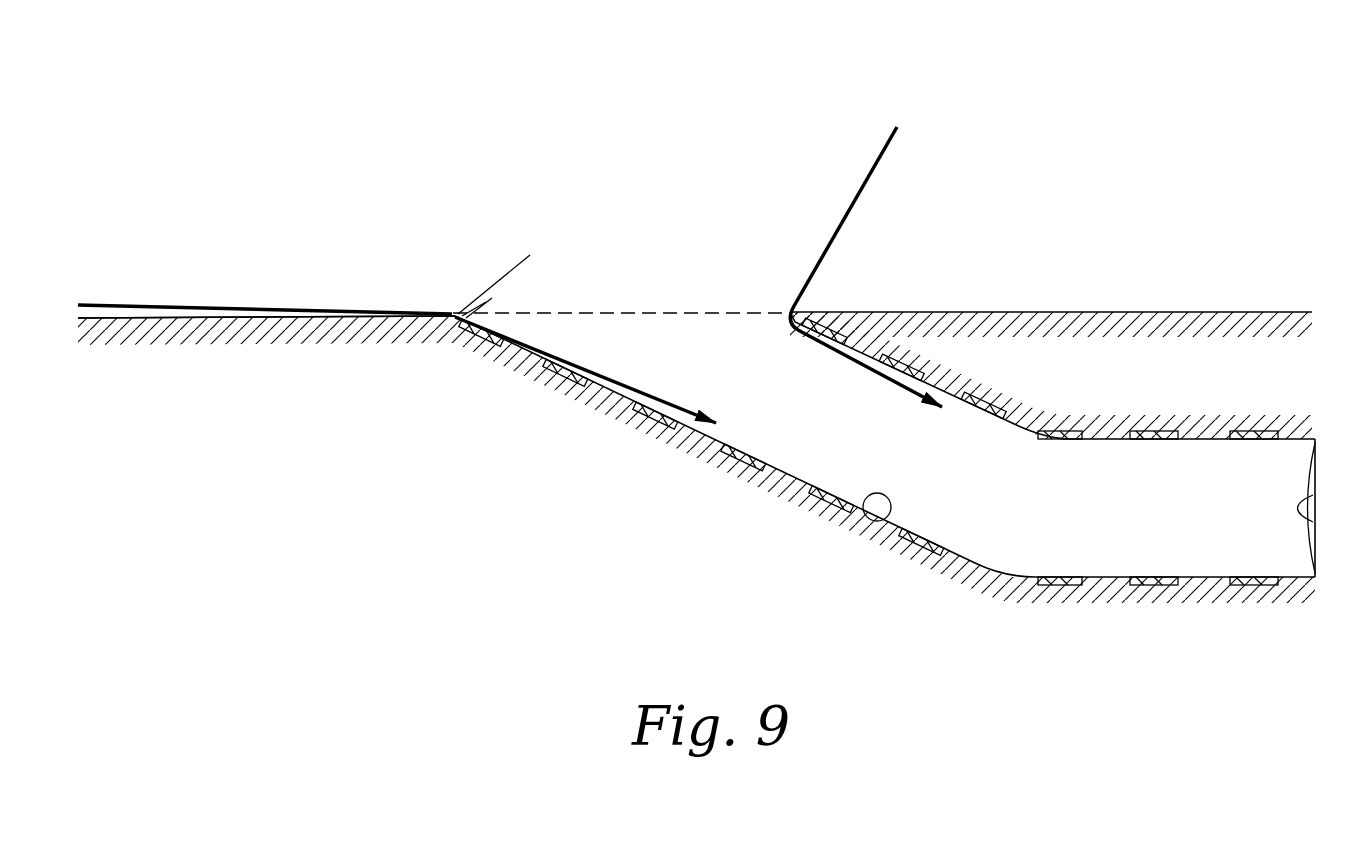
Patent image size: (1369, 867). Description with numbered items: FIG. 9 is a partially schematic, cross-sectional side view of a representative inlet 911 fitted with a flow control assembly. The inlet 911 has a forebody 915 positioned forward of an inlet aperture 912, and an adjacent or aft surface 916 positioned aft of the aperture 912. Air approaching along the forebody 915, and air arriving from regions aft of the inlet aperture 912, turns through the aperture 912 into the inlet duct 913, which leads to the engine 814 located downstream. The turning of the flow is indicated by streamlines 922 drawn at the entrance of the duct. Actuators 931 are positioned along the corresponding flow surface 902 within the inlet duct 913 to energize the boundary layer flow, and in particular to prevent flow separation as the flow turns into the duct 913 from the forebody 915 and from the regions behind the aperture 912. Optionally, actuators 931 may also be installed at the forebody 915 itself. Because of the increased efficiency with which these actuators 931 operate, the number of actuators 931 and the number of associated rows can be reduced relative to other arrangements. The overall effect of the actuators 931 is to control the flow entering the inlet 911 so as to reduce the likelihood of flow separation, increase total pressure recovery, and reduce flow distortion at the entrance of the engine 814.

The inlet 911 is at (548, 115).
The inlet aperture 912 is at (696, 310).
The inlet duct 913 is at (617, 335).
The forebody 915 is at (188, 318).
The aft surface 916 is at (1217, 311).
The streamlines 922 is at (270, 308).
The actuators 931 is at (471, 346).
The flow surface 902 is at (857, 512).
The engine 814 is at (1306, 473).